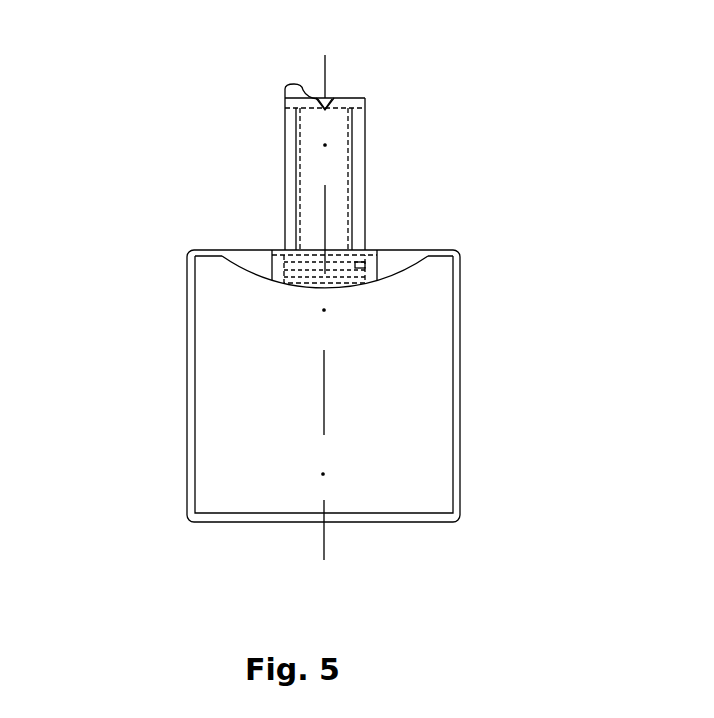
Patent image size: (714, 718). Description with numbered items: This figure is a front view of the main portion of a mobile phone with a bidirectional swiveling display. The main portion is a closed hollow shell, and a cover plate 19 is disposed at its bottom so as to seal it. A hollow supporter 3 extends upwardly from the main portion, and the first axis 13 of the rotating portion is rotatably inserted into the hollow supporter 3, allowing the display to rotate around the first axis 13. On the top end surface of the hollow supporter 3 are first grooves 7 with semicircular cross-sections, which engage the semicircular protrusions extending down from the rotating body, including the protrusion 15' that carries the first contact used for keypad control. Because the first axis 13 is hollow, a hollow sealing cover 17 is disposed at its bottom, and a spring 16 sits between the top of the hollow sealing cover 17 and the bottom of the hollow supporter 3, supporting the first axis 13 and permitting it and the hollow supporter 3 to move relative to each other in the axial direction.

The hollow supporter 3 is at (367, 110).
The protrusion 15' is at (407, 65).
The first groove 7 is at (312, 121).
The first axis 13 is at (351, 112).
The cover plate 19 is at (358, 521).
The hollow sealing cover 17 is at (303, 284).
The spring 16 is at (368, 279).